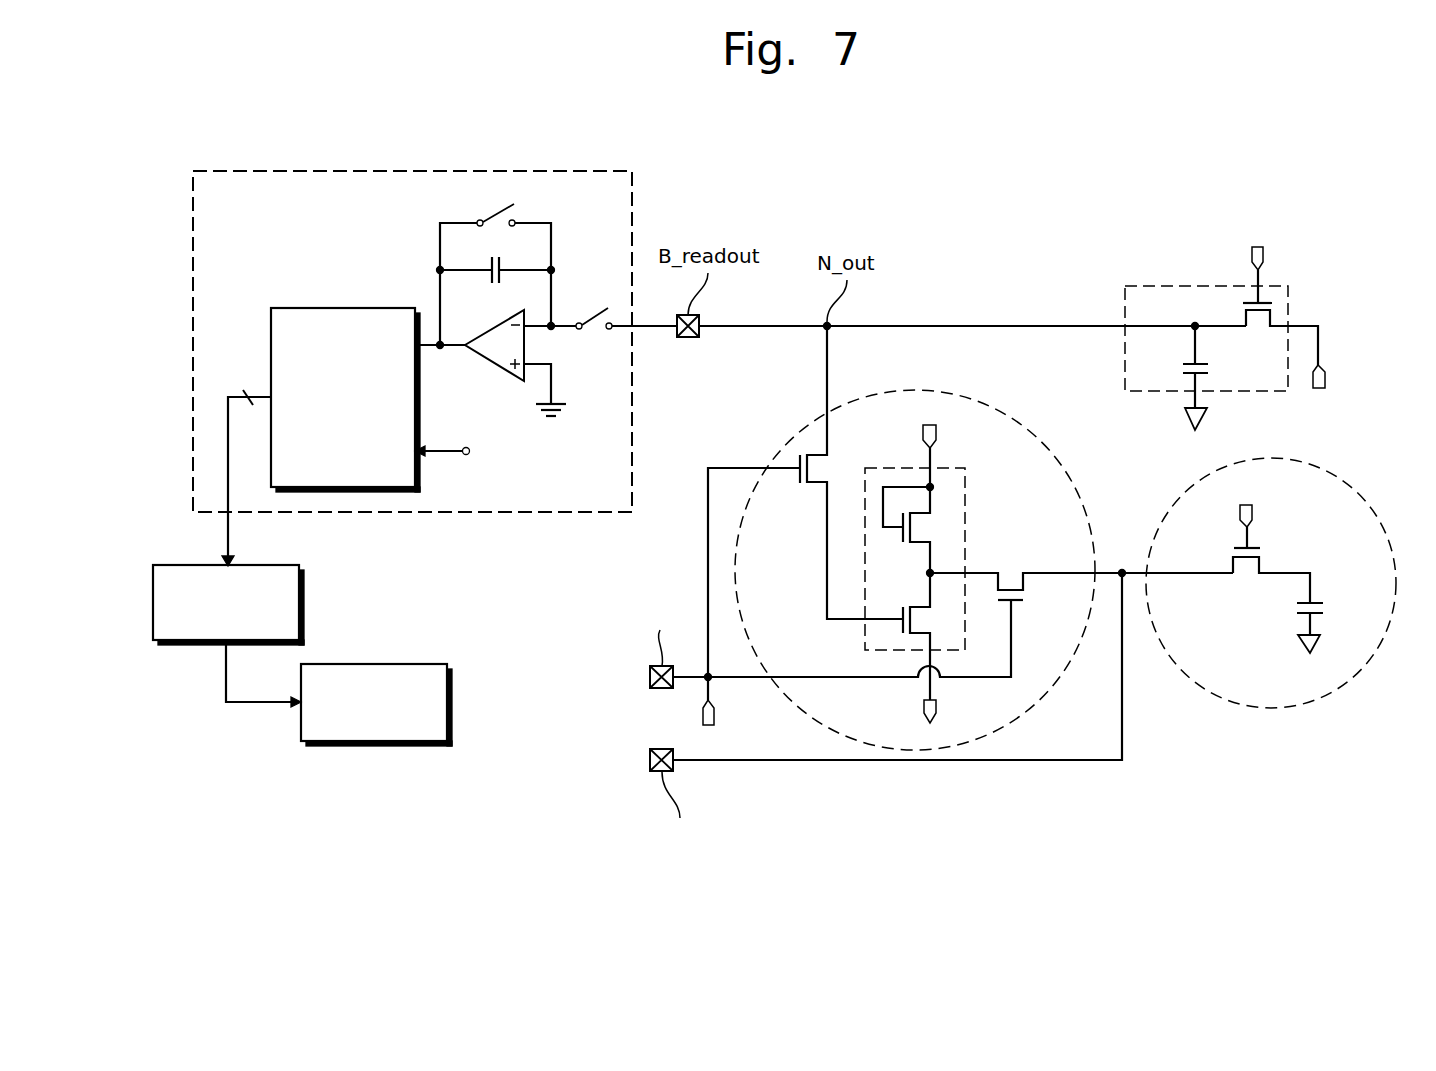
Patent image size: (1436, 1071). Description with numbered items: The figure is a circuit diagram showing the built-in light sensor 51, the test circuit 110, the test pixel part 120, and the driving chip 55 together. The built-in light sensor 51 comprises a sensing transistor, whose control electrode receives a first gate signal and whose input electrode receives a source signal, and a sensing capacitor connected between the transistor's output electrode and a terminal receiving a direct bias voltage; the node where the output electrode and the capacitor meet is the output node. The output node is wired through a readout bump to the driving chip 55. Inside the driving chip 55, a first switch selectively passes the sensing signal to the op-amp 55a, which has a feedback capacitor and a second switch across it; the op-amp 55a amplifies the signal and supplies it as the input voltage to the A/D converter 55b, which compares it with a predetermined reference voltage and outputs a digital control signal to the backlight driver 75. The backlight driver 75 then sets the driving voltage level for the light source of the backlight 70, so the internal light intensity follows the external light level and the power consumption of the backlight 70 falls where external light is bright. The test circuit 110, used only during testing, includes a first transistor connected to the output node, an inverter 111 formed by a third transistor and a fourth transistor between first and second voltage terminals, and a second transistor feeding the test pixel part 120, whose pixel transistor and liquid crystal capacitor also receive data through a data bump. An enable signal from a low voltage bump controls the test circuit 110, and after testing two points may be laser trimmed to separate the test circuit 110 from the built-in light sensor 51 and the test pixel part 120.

The driving chip 55 is at (298, 171).
The op-amp 55a is at (497, 368).
The A/D converter 55b is at (349, 308).
The backlight driver 75 is at (262, 565).
The backlight 70 is at (403, 664).
The built-in light sensor 51 is at (1168, 286).
The test circuit 110 is at (998, 412).
The inverter 111 is at (887, 468).
The test pixel part 120 is at (1340, 480).